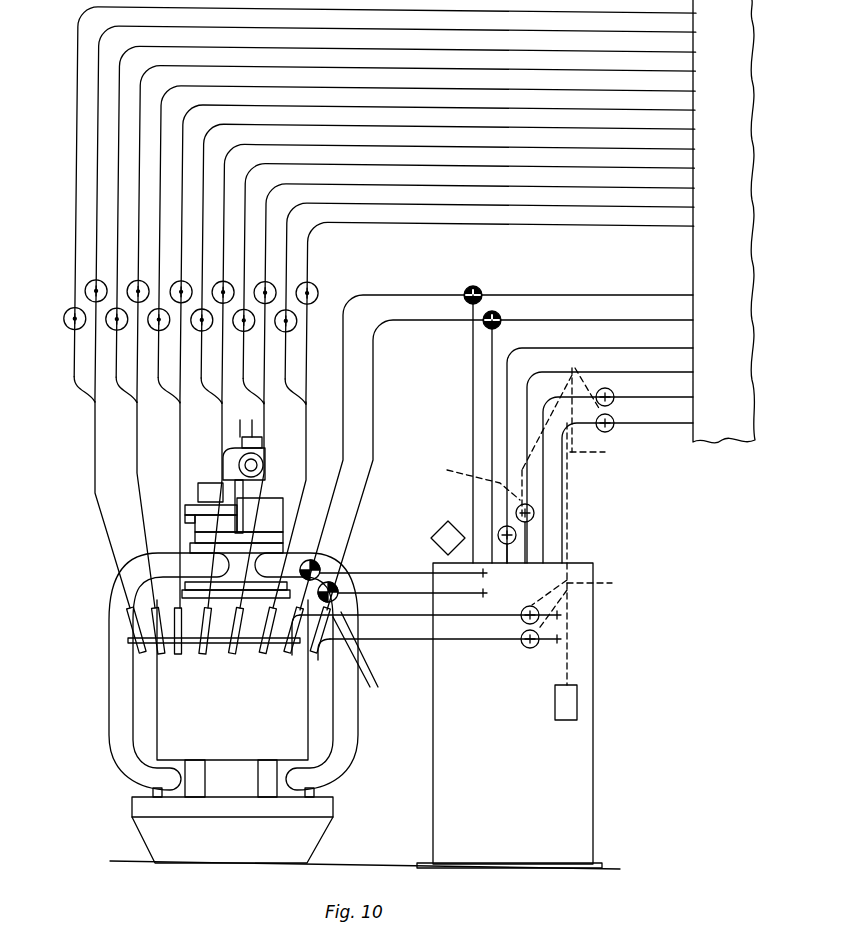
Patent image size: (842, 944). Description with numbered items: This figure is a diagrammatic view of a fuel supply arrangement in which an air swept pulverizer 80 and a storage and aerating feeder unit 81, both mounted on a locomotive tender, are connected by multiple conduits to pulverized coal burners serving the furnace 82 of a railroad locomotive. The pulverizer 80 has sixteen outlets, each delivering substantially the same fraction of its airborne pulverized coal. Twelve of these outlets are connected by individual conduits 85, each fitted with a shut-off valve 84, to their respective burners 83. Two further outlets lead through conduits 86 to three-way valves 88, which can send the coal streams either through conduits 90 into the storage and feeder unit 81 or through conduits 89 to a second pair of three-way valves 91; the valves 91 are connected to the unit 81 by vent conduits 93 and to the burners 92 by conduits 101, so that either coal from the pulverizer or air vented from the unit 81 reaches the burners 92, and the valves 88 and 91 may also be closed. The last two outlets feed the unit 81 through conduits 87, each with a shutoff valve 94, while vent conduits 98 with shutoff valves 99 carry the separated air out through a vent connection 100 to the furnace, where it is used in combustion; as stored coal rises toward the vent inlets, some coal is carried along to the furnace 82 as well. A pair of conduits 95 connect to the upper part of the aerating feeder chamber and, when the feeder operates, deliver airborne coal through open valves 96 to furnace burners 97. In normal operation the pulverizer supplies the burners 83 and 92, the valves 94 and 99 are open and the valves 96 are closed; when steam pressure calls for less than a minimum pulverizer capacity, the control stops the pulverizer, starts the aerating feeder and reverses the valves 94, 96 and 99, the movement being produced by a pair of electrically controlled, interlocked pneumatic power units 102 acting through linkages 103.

The air swept pulverizer 80 is at (247, 714).
The storage and aerating feeder unit 81 is at (521, 744).
The furnace 82 is at (735, 202).
The burners 83 is at (617, 92).
The shut-off valve 84 is at (84, 290).
The conduits 85 is at (93, 363).
The conduits 86 is at (361, 663).
The conduits 87 is at (418, 617).
The three-way valves 88 is at (340, 562).
The conduits 89 is at (373, 424).
The conduits 90 is at (400, 592).
The three-way valves 91 is at (465, 290).
The burners 92 is at (691, 298).
The vent conduits 93 is at (474, 456).
The shutoff valve 94 is at (527, 668).
The conduits 95 is at (585, 356).
The valves 96 is at (500, 529).
The furnace burners 97 is at (691, 352).
The vent conduits 98 is at (546, 432).
The shutoff valves 99 is at (622, 408).
The vent connection 100 is at (703, 430).
The conduits 101 is at (601, 318).
The pneumatic power units 102 is at (441, 531).
The linkages 103 is at (534, 530).